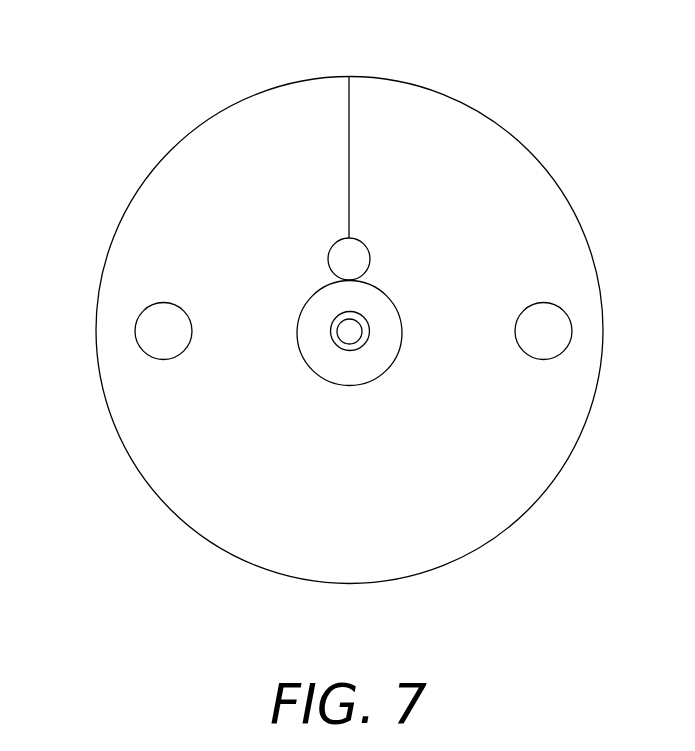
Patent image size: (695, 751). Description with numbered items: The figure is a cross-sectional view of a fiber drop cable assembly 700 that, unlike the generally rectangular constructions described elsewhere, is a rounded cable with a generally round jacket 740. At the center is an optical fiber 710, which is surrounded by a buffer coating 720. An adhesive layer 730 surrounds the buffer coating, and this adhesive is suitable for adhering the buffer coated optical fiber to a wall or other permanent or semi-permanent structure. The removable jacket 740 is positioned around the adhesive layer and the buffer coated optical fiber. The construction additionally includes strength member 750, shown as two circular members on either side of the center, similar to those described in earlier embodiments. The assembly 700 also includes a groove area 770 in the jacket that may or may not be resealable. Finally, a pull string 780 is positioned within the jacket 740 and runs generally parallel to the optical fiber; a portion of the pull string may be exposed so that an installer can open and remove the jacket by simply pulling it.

The fiber drop cable assembly 700 is at (138, 66).
The optical fiber 710 is at (345, 345).
The buffer coating 720 is at (348, 331).
The adhesive layer 730 is at (307, 357).
The jacket 740 is at (507, 473).
The strength member 750 is at (148, 305).
The groove area 770 is at (349, 120).
The pull string 780 is at (368, 245).